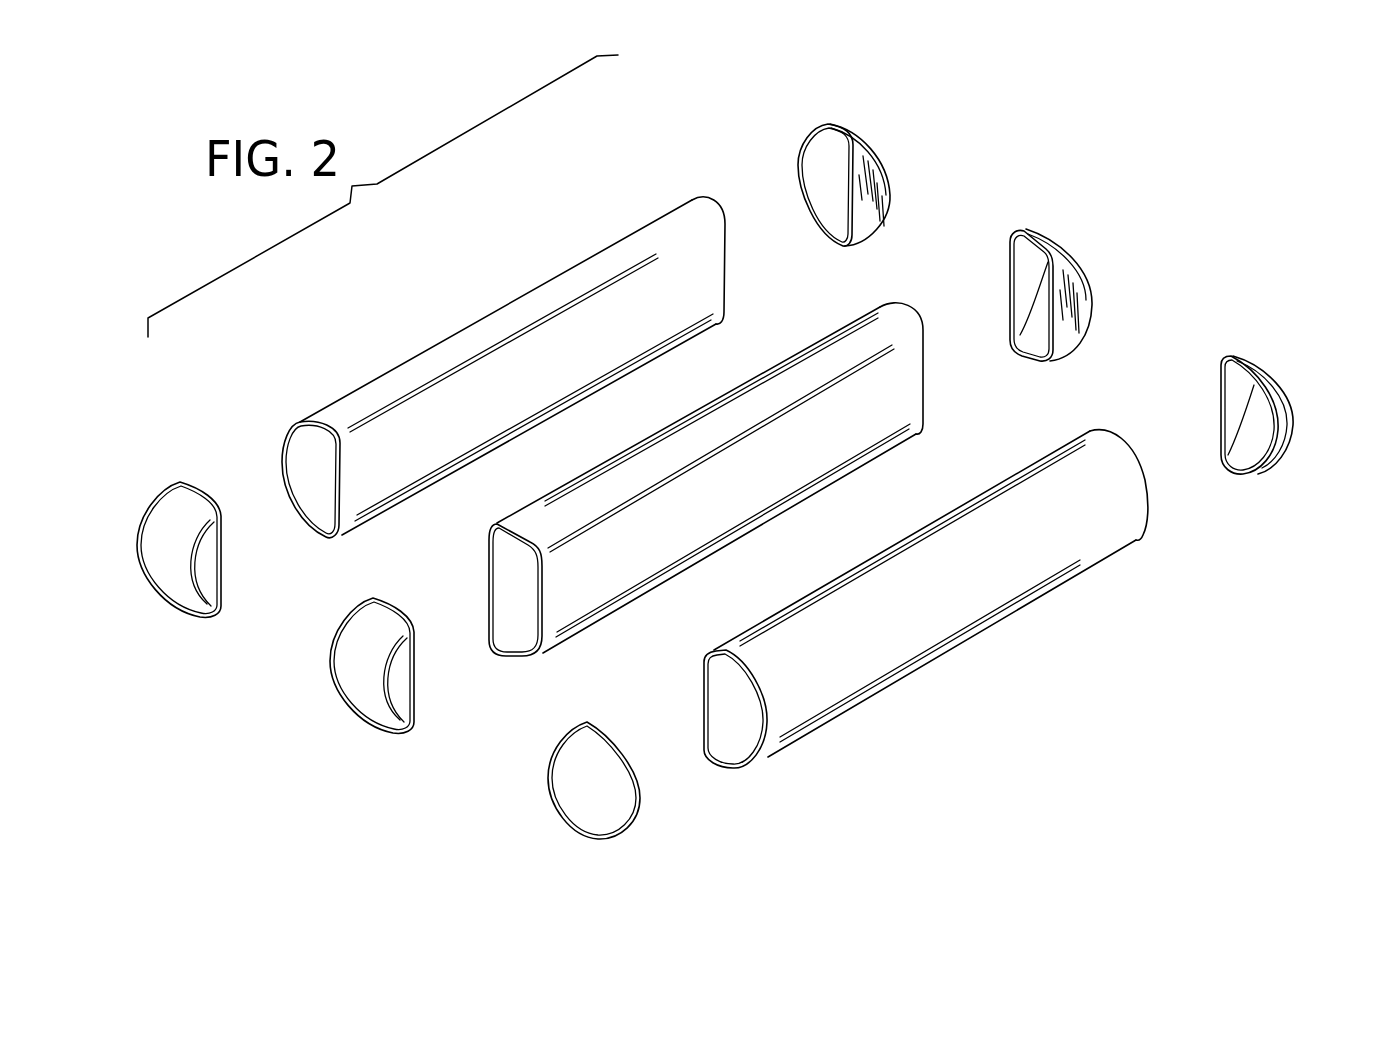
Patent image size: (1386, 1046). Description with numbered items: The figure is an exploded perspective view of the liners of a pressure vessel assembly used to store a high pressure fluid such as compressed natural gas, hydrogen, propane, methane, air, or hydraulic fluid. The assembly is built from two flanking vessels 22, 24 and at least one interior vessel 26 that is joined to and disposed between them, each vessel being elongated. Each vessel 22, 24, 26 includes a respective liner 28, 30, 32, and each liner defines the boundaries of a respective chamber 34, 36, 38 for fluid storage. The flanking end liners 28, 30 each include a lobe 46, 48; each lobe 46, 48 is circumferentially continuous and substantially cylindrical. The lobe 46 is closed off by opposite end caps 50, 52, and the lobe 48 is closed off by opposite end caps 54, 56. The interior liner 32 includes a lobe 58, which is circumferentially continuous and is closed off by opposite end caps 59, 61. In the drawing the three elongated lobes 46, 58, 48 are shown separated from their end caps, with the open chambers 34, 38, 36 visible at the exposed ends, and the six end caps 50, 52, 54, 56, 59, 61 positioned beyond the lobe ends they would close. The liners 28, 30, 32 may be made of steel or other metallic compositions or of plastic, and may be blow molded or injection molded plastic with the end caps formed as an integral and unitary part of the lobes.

The flanking vessel 22 is at (881, 159).
The flanking vessel 24 is at (1295, 384).
The interior vessel 26 is at (1081, 262).
The liner 28 is at (503, 367).
The liner 30 is at (926, 599).
The interior liner 32 is at (706, 479).
The chamber 34 is at (333, 483).
The chamber 36 is at (752, 743).
The chamber 38 is at (532, 605).
The lobe 46 is at (407, 497).
The lobe 48 is at (873, 697).
The end cap 50 is at (203, 618).
The end cap 52 is at (878, 150).
The end cap 54 is at (623, 835).
The end cap 56 is at (1278, 390).
The lobe 58 is at (648, 592).
The end cap 59 is at (402, 733).
The end cap 61 is at (1060, 242).